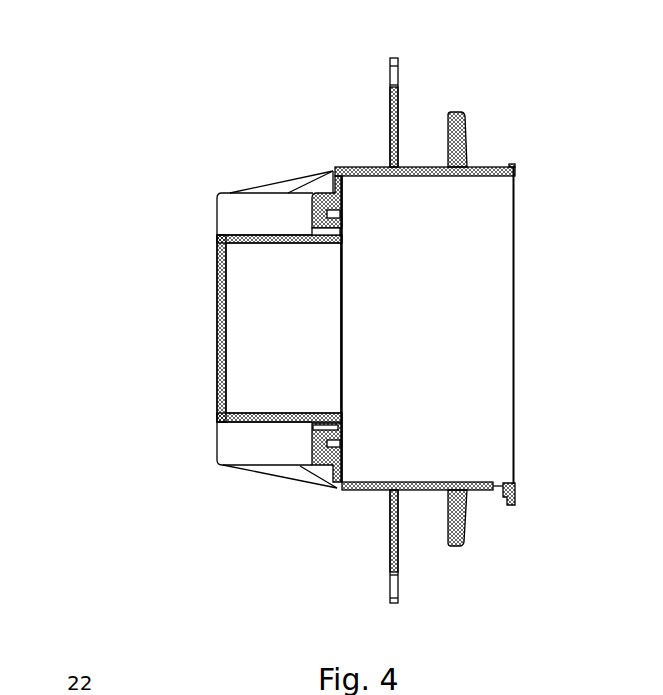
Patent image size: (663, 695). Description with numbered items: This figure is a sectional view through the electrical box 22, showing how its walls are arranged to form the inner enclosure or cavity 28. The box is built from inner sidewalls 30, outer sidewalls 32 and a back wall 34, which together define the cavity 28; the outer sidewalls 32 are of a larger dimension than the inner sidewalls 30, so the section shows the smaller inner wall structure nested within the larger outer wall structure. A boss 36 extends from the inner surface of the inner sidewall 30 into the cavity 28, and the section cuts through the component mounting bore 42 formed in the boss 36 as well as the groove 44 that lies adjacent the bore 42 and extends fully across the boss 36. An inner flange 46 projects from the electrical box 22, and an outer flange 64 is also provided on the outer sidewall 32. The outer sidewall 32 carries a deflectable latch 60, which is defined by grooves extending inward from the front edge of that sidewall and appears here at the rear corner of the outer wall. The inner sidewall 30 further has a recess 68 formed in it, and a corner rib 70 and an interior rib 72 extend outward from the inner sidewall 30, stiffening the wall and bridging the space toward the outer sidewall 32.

The electrical box 22 is at (158, 206).
The inner enclosure or cavity 28 is at (301, 338).
The inner sidewall 30 is at (267, 245).
The outer sidewall 32 is at (434, 177).
The back wall 34 is at (220, 302).
The boss 36 is at (322, 443).
The component mounting bore 42 is at (342, 232).
The groove 44 is at (340, 214).
The inner flange 46 is at (394, 57).
The deflectable latch 60 is at (513, 505).
The outer flange 64 is at (455, 112).
The recess 68 is at (270, 215).
The corner rib 70 is at (292, 478).
The interior rib 72 is at (315, 482).